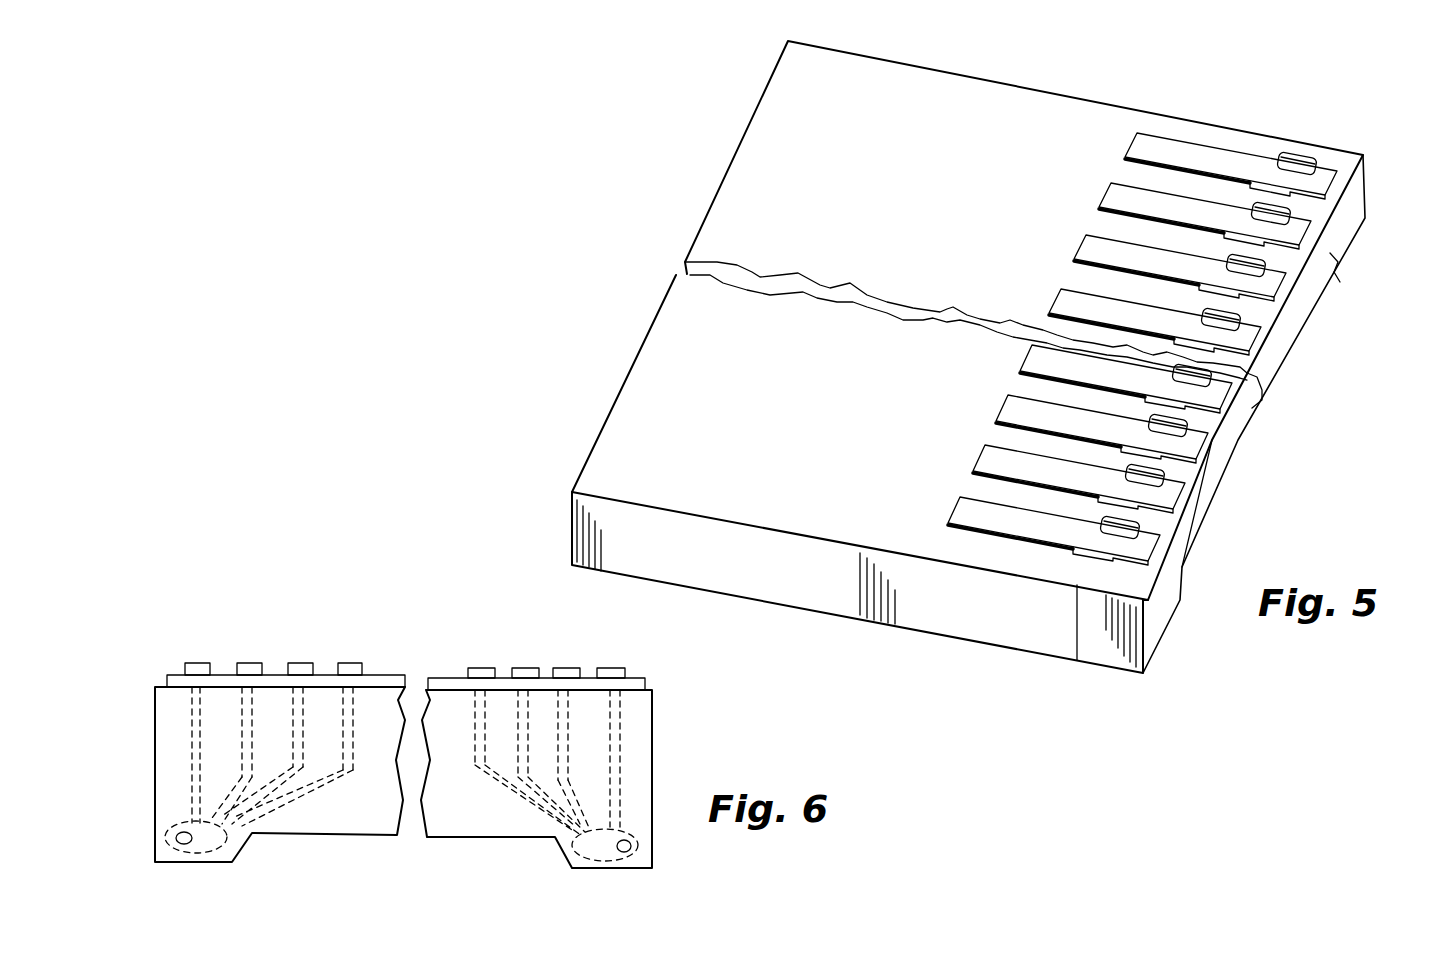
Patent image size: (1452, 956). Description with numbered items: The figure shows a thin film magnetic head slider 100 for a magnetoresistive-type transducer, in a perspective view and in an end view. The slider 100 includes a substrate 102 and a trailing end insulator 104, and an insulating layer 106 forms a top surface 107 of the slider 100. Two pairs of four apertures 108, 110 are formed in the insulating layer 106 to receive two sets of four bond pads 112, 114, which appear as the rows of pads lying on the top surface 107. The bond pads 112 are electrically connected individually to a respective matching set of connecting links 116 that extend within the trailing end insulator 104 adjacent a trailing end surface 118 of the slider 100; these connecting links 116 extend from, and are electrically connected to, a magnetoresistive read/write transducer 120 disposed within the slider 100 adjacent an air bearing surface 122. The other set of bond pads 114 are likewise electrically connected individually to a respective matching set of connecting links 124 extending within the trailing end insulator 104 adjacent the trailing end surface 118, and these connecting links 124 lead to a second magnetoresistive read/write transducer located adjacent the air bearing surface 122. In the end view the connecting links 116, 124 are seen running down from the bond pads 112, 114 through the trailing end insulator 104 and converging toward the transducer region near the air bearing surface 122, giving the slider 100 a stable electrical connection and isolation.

In FIG. 5, the slider 100 is at (738, 128).
In FIG. 6, the slider 100 is at (413, 648).
In FIG. 5, the substrate 102 is at (756, 574).
In FIG. 5, the trailing end insulator 104 is at (1103, 648).
In FIG. 5, the insulating layer 106 is at (888, 196).
In FIG. 5, the top surface 107 is at (1058, 128).
In FIG. 5, the apertures 108 is at (1180, 432).
In FIG. 5, the apertures 110 is at (1290, 212).
In FIG. 5, the bond pads 112 is at (1012, 410).
In FIG. 6, the bond pads 112 is at (342, 663).
In FIG. 5, the bond pads 114 is at (1122, 205).
In FIG. 6, the bond pads 114 is at (607, 665).
In FIG. 6, the connecting links 116 is at (348, 753).
In FIG. 5, the trailing end surface 118 is at (1153, 622).
In FIG. 6, the trailing end surface 118 is at (500, 829).
In FIG. 6, the magnetoresistive read/write transducer 120 is at (205, 843).
In FIG. 5, the air bearing surface 122 is at (1190, 595).
In FIG. 6, the air bearing surface 122 is at (267, 837).
In FIG. 6, the connecting links 124 is at (477, 743).